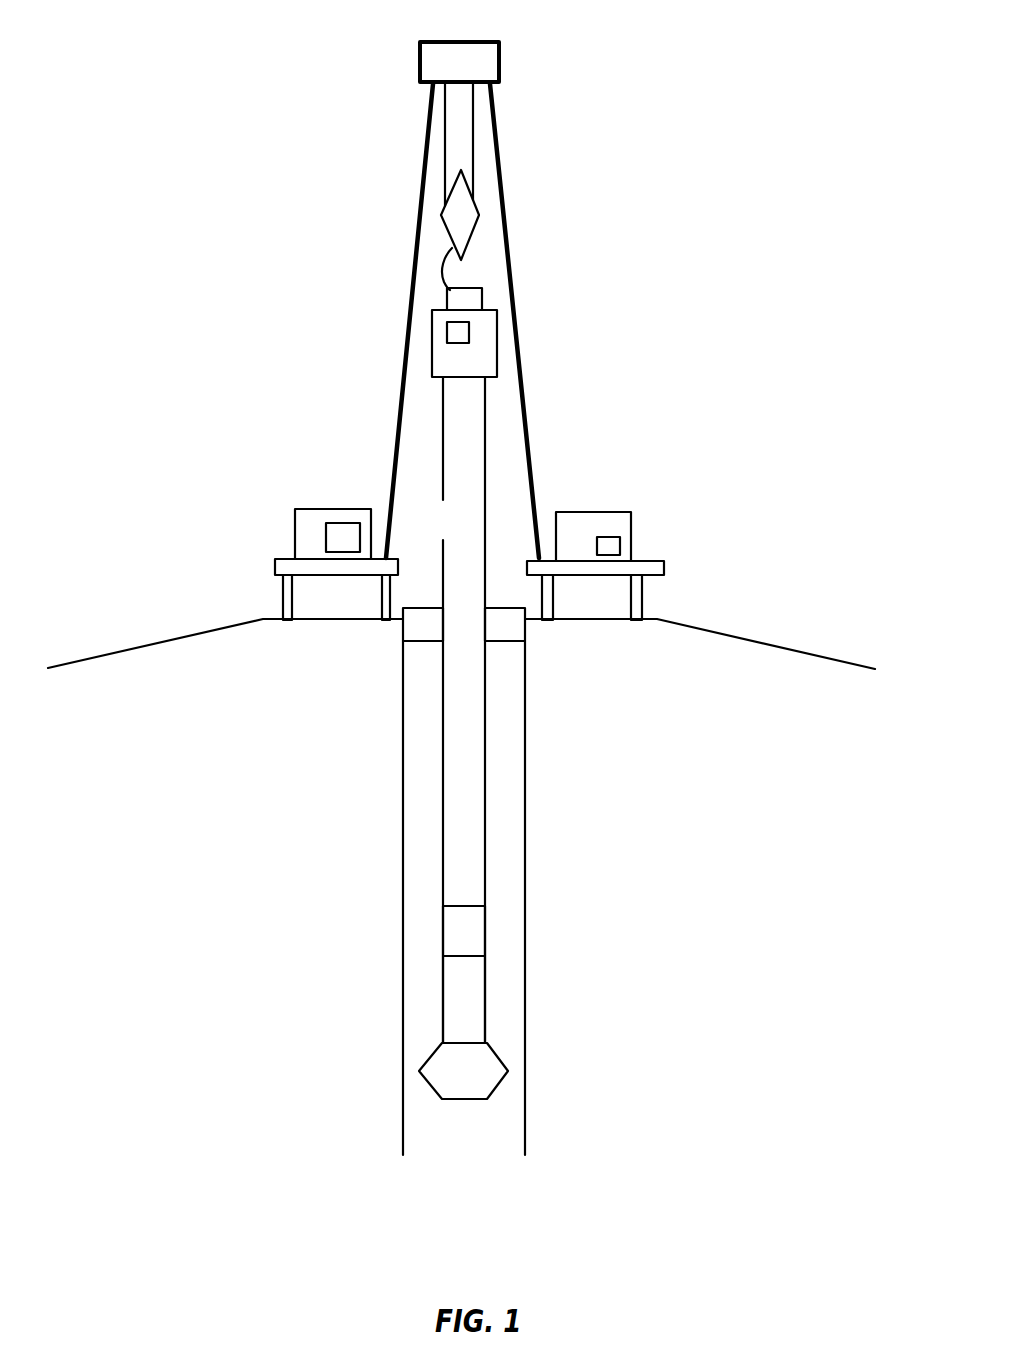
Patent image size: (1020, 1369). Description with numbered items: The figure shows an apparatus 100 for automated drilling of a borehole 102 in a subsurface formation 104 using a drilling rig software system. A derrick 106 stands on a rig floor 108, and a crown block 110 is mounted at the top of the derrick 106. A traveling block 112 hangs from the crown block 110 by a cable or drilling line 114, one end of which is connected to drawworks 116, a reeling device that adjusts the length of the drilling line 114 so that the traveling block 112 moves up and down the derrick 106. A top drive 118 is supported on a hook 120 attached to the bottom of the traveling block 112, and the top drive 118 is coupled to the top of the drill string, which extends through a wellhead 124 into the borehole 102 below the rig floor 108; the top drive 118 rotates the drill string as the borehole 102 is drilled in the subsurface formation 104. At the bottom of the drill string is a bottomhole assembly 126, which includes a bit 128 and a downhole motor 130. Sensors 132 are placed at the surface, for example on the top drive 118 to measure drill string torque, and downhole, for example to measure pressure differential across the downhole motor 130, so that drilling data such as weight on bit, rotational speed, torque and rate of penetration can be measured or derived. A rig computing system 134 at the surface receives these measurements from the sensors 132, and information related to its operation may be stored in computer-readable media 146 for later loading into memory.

The apparatus 100 is at (263, 49).
The borehole 102 is at (420, 697).
The subsurface formation 104 is at (245, 674).
The derrick 106 is at (510, 321).
The rig floor 108 is at (423, 569).
The crown block 110 is at (509, 52).
The traveling block 112 is at (512, 205).
The drilling line 114 is at (407, 145).
The drawworks 116 is at (293, 504).
The top drive 118 is at (517, 325).
The hook 120 is at (397, 243).
The wellhead 124 is at (508, 647).
The bottomhole assembly 126 is at (547, 710).
The bit 128 is at (399, 1060).
The downhole motor 130 is at (533, 993).
The sensors 132 is at (461, 620).
The rig computing system 134 is at (620, 517).
The computer-readable media 146 is at (662, 539).